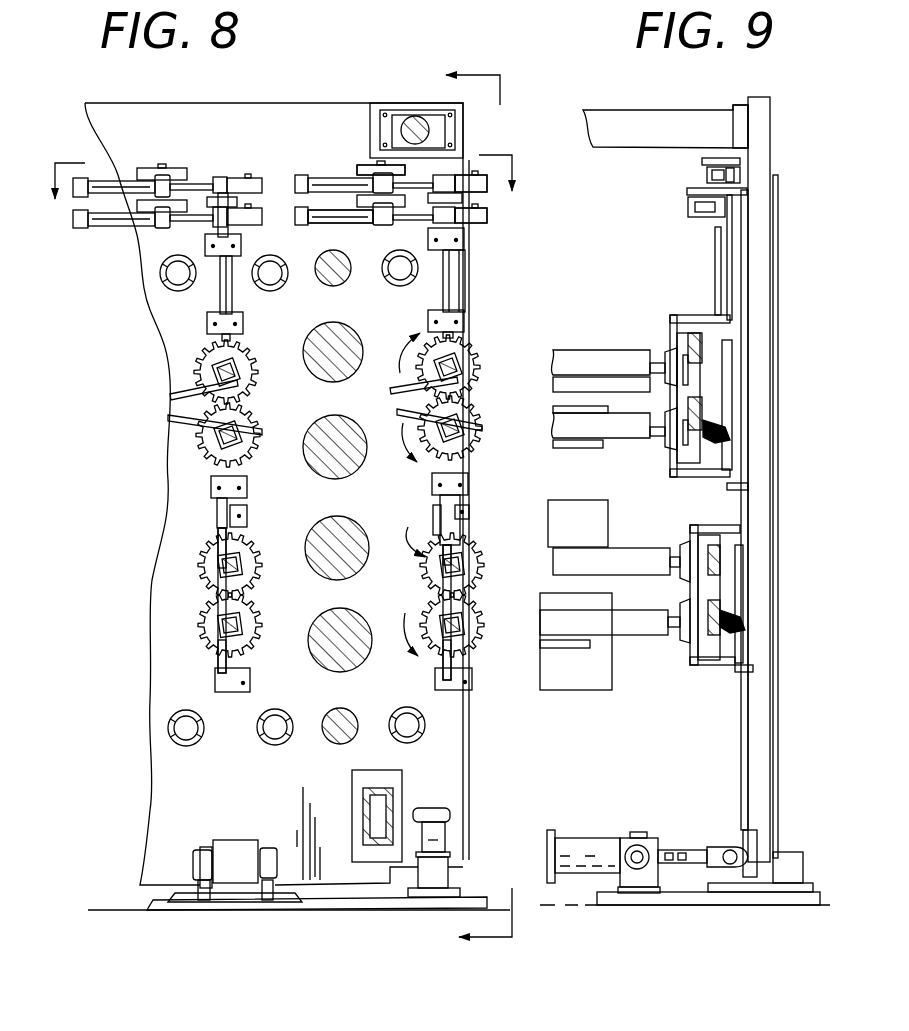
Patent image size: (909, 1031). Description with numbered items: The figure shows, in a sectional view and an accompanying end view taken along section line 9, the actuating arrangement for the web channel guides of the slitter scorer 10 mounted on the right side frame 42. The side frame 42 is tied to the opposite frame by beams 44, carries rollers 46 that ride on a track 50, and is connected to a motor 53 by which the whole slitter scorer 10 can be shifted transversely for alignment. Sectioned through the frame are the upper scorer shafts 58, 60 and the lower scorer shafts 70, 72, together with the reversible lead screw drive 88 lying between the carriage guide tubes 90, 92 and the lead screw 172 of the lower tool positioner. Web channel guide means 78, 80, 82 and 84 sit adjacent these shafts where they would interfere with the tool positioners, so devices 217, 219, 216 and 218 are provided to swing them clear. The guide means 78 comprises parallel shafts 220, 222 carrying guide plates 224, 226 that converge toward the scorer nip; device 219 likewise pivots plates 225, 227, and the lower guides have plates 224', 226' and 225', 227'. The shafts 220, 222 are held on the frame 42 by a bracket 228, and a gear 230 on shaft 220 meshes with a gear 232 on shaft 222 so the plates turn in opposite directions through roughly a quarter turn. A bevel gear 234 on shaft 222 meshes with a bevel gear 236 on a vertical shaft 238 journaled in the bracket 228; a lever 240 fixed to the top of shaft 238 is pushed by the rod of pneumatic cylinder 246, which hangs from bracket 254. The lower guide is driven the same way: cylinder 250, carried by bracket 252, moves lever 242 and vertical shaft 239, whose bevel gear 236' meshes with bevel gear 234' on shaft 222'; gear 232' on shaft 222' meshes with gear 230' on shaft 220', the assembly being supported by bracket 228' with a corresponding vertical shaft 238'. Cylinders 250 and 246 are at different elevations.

In FIG. 8, the section line 9— 9 is at (467, 504).
In FIG. 8, the slitter scorer 10 is at (283, 197).
In FIG. 8, the right side frame 42 is at (228, 103).
In FIG. 9, the right side frame 42 is at (760, 764).
In FIG. 8, the beam 44 is at (403, 122).
In FIG. 9, the beam 44 is at (612, 136).
In FIG. 8, the roller 46 is at (432, 835).
In FIG. 9, the roller 46 is at (777, 850).
In FIG. 8, the track 50 is at (440, 877).
In FIG. 9, the track 50 is at (772, 875).
In FIG. 8, the motor 53 is at (232, 847).
In FIG. 9, the motor 53 is at (580, 843).
In FIG. 8, the upper scorer shaft 58 is at (388, 327).
In FIG. 8, the upper scorer shaft 60 is at (320, 463).
In FIG. 8, the lower scorer shaft 70 is at (320, 522).
In FIG. 8, the lower scorer shaft 72 is at (320, 656).
In FIG. 8, the web channel guide means 78 is at (404, 416).
In FIG. 8, the web channel guide means 80 is at (176, 434).
In FIG. 8, the web channel guide means 82 is at (445, 611).
In FIG. 8, the web channel guide means 84 is at (174, 606).
In FIG. 8, the reversible lead screw drive 88 is at (338, 287).
In FIG. 8, the carriage guide tube 90 is at (288, 283).
In FIG. 8, the carriage guide tube 92 is at (393, 254).
In FIG. 8, the lead screw 172 is at (345, 740).
In FIG. 8, the device 216 is at (290, 164).
In FIG. 8, the device 217 is at (338, 231).
In FIG. 8, the device 218 is at (177, 156).
In FIG. 8, the device 219 is at (117, 230).
In FIG. 8, the shaft 220 is at (477, 367).
In FIG. 9, the shaft 220 is at (608, 349).
In FIG. 8, the shaft 222 is at (479, 426).
In FIG. 9, the shaft 222 is at (614, 440).
In FIG. 8, the guide plate 224 is at (362, 390).
In FIG. 9, the guide plate 224 is at (603, 395).
In FIG. 8, the plate 225 is at (171, 377).
In FIG. 8, the guide plate 226 is at (410, 409).
In FIG. 9, the guide plate 226 is at (551, 462).
In FIG. 8, the plate 227 is at (176, 415).
In FIG. 9, the bracket 228 is at (667, 395).
In FIG. 8, the gear 230 is at (486, 376).
In FIG. 9, the gear 230 is at (655, 336).
In FIG. 8, the gear 232 is at (487, 435).
In FIG. 9, the gear 232 is at (656, 447).
In FIG. 9, the bevel gear 234 is at (671, 447).
In FIG. 9, the bevel gear 236 is at (703, 497).
In FIG. 8, the vertical shaft 238 is at (481, 270).
In FIG. 9, the vertical shaft 238 is at (680, 271).
In FIG. 8, the vertical shaft 239 is at (467, 493).
In FIG. 9, the vertical shaft 239 is at (740, 277).
In FIG. 8, the lever 240 is at (472, 220).
In FIG. 9, the lever 240 is at (688, 212).
In FIG. 8, the lever 242 is at (485, 186).
In FIG. 9, the lever 242 is at (703, 168).
In FIG. 8, the pneumatic cylinder 246 is at (330, 212).
In FIG. 8, the cylinder 250 is at (358, 178).
In FIG. 9, the bracket 252 is at (712, 157).
In FIG. 9, the bracket 254 is at (688, 192).
In FIG. 8, the shaft 220' is at (481, 565).
In FIG. 9, the shaft 220' is at (577, 508).
In FIG. 8, the shaft 222' is at (481, 622).
In FIG. 9, the shaft 222' is at (615, 661).
In FIG. 8, the plate 224' is at (399, 577).
In FIG. 9, the plate 224' is at (590, 546).
In FIG. 8, the plate 225' is at (165, 544).
In FIG. 8, the plate 226' is at (408, 663).
In FIG. 9, the plate 226' is at (541, 686).
In FIG. 8, the plate 227' is at (158, 655).
In FIG. 9, the bracket 228' is at (684, 625).
In FIG. 8, the gear 230' is at (489, 575).
In FIG. 9, the gear 230' is at (667, 573).
In FIG. 8, the gear 232' is at (489, 632).
In FIG. 9, the gear 232' is at (667, 633).
In FIG. 9, the bevel gear 234' is at (691, 667).
In FIG. 9, the bevel gear 236' is at (723, 676).
In FIG. 9, the vertical shaft 238' is at (687, 522).